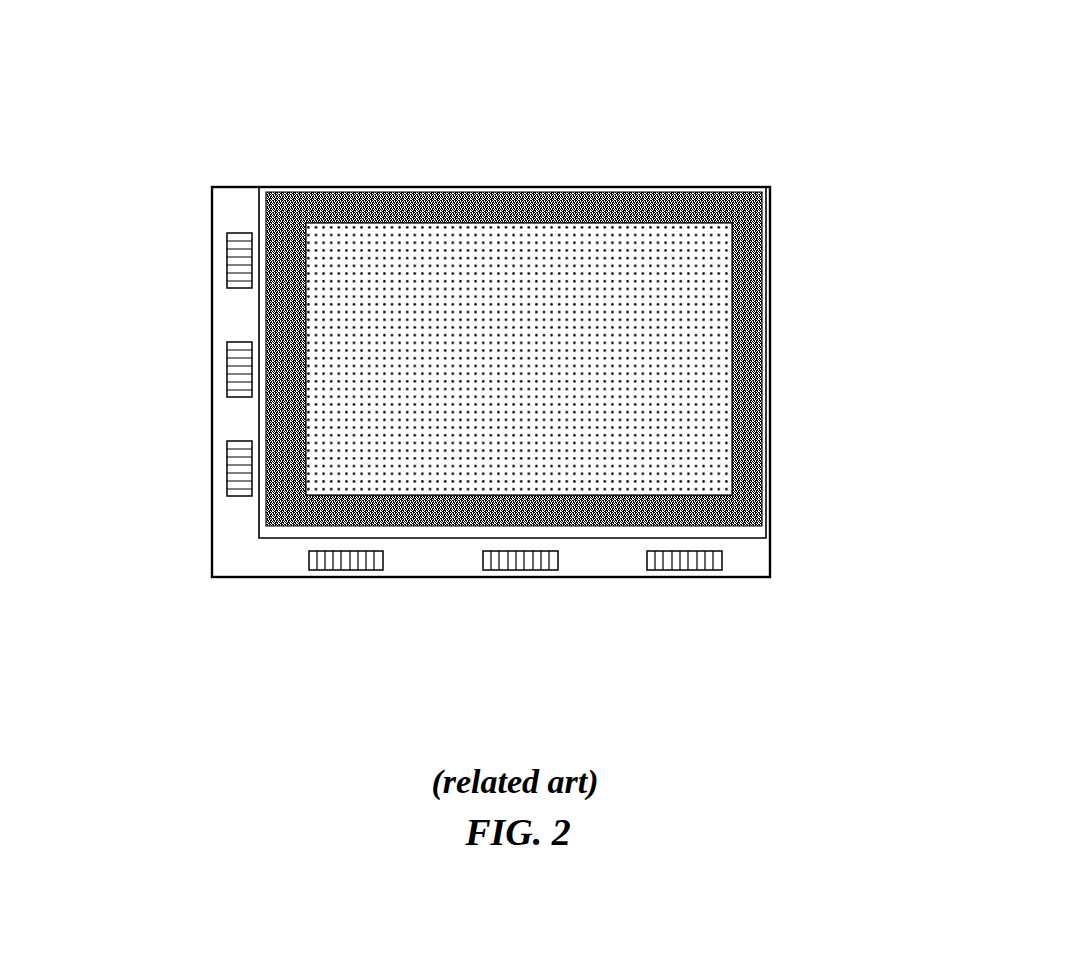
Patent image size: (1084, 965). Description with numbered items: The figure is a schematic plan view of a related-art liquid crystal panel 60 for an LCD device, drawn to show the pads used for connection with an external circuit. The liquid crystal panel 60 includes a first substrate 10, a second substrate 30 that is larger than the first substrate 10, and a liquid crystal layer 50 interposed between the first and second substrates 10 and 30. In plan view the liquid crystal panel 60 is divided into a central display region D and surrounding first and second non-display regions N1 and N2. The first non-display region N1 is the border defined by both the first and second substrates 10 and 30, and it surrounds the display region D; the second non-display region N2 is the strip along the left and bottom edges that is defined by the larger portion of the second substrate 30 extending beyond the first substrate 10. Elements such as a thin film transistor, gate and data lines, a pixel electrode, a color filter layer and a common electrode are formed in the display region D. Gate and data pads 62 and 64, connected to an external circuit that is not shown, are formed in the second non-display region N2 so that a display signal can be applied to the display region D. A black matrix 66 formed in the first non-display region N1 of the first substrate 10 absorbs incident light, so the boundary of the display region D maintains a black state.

The first substrate 10 is at (772, 412).
The second substrate 30 is at (772, 558).
The liquid crystal layer 50 is at (710, 360).
The liquid crystal panel 60 is at (511, 373).
The gate pad 62 is at (233, 255).
The data pad 64 is at (348, 560).
The black matrix 66 is at (645, 196).
The display region D is at (458, 222).
The first non-display region N1 is at (547, 188).
The second non-display region N2 is at (267, 560).